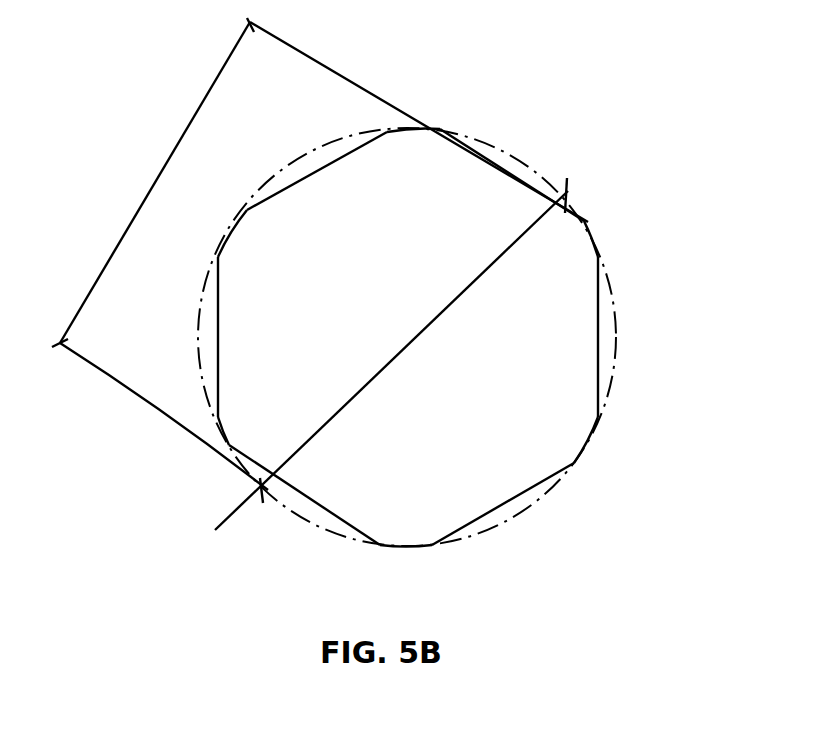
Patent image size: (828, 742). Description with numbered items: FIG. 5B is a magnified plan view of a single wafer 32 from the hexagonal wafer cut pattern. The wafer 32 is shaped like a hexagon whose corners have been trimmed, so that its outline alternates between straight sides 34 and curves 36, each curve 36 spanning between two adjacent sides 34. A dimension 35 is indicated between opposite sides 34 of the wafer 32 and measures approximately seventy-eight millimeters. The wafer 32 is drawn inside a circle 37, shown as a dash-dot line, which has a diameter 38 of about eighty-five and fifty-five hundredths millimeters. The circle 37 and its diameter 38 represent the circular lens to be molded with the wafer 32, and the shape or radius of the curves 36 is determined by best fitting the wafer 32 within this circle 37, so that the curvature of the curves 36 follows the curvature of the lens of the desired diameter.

The wafer 32 is at (453, 337).
The sides 34 is at (322, 170).
The dimension 35 is at (159, 172).
The curves 36 is at (412, 133).
The circle 37 is at (497, 140).
The diameter 38 is at (586, 184).